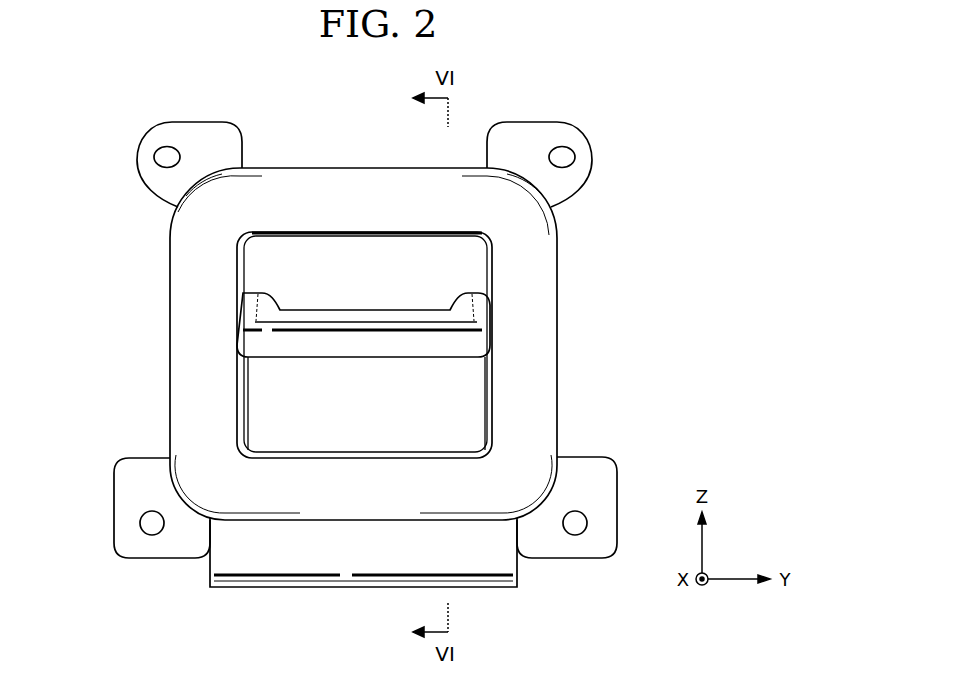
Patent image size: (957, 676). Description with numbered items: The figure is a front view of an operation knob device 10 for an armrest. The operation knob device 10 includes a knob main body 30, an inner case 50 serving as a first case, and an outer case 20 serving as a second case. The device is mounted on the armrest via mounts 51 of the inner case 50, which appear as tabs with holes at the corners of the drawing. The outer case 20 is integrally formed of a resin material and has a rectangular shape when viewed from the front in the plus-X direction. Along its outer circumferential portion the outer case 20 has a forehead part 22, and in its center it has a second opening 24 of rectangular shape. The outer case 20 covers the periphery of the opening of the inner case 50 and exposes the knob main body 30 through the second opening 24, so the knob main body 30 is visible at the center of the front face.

The operation knob device 10 is at (683, 158).
The outer case 20 is at (522, 247).
The forehead part 22 is at (316, 197).
The second opening 24 is at (379, 237).
The knob main body 30 is at (472, 342).
The inner case 50 is at (485, 557).
The mounts 51 is at (120, 498).